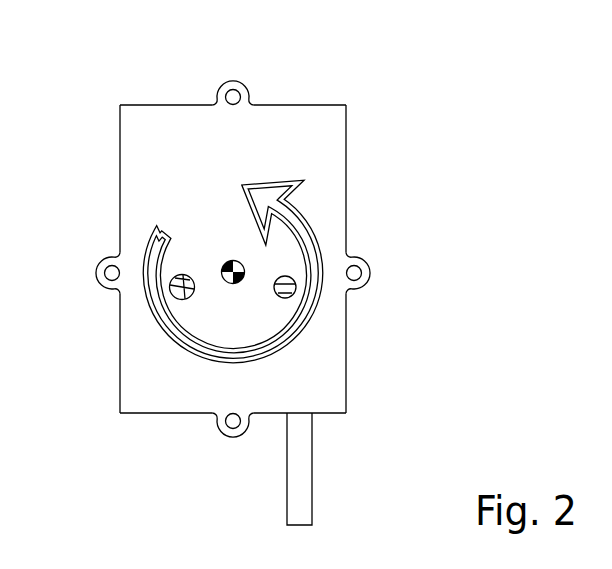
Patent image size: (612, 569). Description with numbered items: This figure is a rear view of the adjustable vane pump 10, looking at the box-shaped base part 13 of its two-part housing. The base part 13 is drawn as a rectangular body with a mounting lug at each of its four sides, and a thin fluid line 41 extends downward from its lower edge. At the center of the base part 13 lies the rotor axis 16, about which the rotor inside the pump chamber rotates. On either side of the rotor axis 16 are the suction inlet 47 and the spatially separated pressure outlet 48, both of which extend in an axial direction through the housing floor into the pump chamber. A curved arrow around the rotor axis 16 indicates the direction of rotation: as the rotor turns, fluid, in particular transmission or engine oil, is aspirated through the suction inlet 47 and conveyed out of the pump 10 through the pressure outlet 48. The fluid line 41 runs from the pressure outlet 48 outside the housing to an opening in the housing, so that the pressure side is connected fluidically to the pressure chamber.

The adjustable vane pump 10 is at (82, 77).
The box-shaped base part 13 is at (323, 149).
The rotor axis 16 is at (225, 280).
The fluid line 41 is at (300, 470).
The suction inlet 47 is at (168, 290).
The pressure outlet 48 is at (302, 290).